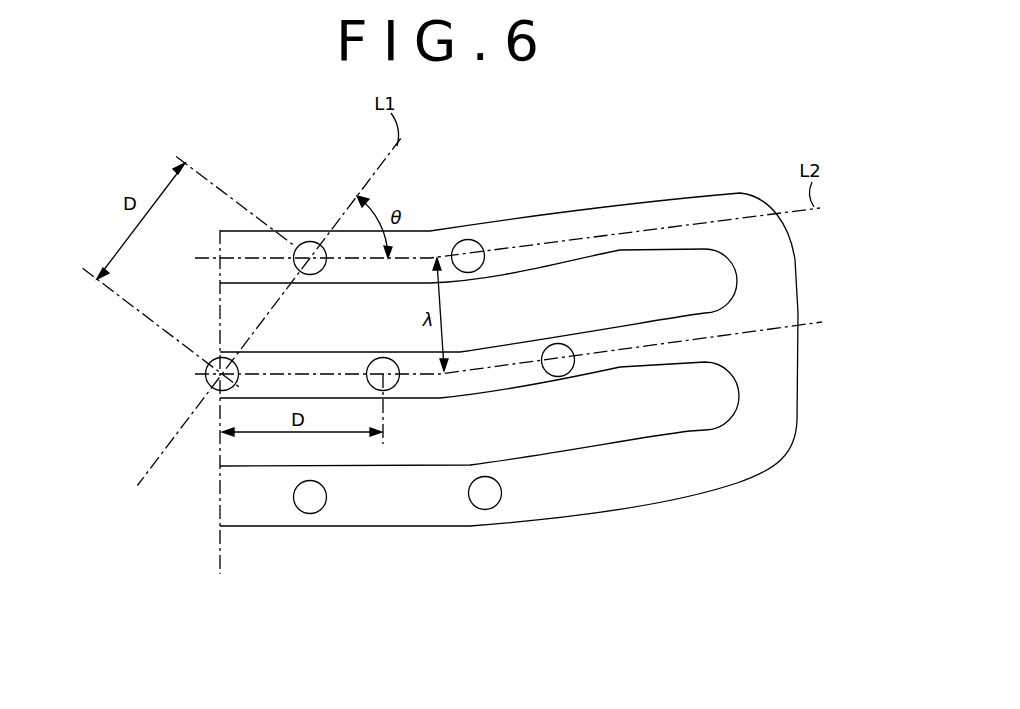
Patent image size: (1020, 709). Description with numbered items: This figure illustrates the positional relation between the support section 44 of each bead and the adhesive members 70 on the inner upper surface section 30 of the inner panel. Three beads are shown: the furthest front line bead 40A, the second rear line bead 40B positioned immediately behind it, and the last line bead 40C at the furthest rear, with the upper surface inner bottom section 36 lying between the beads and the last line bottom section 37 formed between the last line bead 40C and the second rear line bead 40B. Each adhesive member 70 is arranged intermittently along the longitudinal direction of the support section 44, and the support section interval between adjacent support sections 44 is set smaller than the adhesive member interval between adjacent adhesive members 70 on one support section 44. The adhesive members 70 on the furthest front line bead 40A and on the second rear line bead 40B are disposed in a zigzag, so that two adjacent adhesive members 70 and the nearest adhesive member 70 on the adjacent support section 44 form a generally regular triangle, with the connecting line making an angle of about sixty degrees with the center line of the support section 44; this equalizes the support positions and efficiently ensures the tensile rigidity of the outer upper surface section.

The inner upper surface section 30 is at (709, 190).
The upper surface inner bottom section 36 is at (612, 290).
The last line bottom section 37 is at (623, 415).
The furthest front line bead 40A is at (528, 218).
The second rear line bead 40B is at (500, 346).
The last line bead 40C is at (543, 452).
The support section 44 is at (584, 228).
The adhesive member 70 is at (468, 239).